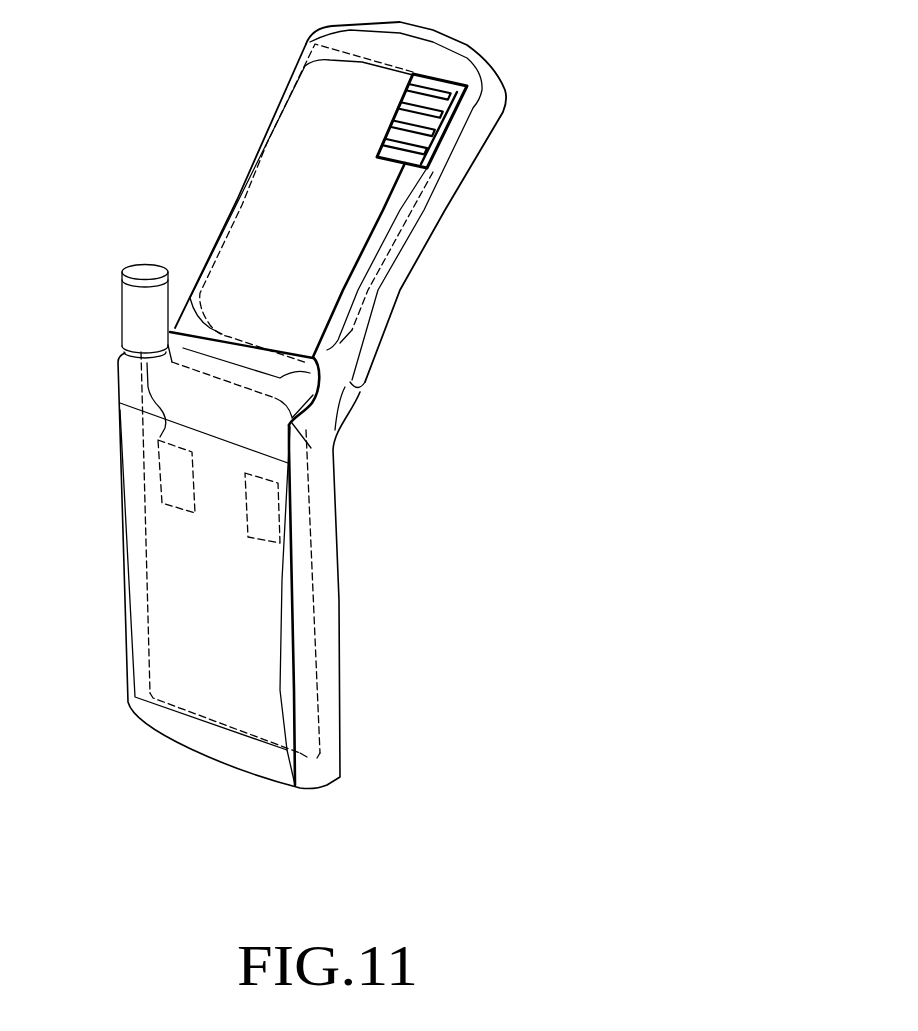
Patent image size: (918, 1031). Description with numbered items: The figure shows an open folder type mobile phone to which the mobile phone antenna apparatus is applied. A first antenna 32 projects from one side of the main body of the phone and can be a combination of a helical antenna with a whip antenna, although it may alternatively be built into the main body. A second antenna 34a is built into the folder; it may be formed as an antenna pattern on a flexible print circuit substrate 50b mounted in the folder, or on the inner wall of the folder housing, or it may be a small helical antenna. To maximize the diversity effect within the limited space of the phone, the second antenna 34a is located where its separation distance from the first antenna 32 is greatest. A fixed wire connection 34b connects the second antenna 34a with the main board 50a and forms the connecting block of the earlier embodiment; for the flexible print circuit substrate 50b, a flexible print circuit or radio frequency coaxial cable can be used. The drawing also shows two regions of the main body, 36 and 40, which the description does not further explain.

The first antenna 32 is at (130, 318).
The second antenna 34a is at (470, 102).
The fixed wire connection 34b is at (355, 266).
The component mounted in lower housing 36 is at (270, 512).
The component mounted in lower housing 40 is at (168, 482).
The main board 50a is at (303, 659).
The flexible print circuit substrate 50b is at (273, 162).